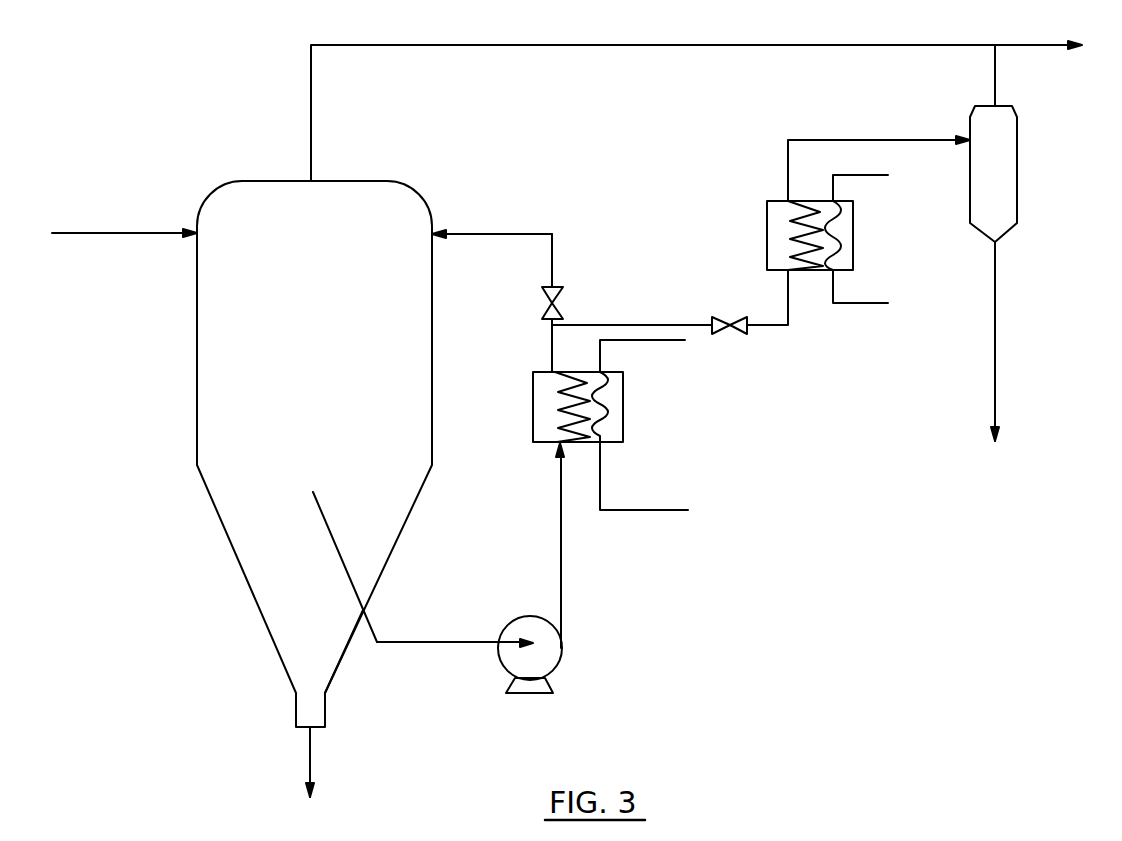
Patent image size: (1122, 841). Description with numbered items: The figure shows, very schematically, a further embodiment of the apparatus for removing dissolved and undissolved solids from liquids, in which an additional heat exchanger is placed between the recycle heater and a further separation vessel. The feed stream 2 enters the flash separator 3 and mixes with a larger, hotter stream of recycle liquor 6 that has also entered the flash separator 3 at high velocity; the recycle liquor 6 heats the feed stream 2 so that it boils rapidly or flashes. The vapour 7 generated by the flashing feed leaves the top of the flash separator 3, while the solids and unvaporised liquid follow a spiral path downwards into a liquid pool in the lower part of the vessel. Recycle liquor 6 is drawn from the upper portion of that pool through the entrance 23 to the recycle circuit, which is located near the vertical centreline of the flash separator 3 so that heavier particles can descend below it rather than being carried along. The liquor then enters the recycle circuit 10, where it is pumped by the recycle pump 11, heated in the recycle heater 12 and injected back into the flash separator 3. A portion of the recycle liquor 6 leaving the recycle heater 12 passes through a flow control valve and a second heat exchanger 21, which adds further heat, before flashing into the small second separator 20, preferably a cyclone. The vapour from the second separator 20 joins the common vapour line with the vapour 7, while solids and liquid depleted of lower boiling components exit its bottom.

The feed stream 2 is at (124, 221).
The flash separator 3 is at (197, 380).
The recycle liquor 6 is at (492, 232).
The vapour 7 is at (706, 105).
The recycle circuit 10 is at (357, 596).
The recycle pump 11 is at (558, 665).
The recycle heater 12 is at (623, 423).
The second separator 20 is at (1017, 170).
The second heat exchanger 21 is at (853, 232).
The entrance to the recycle circuit 23 is at (313, 492).